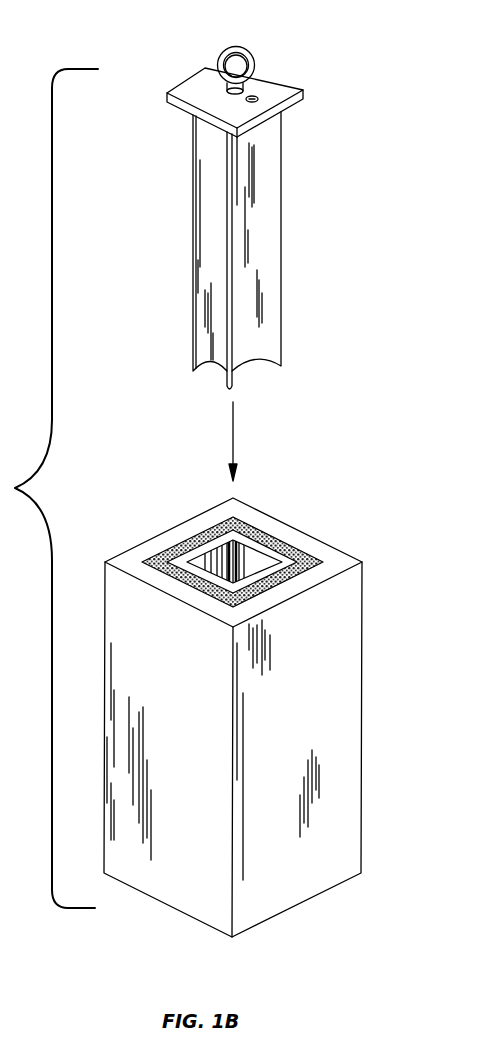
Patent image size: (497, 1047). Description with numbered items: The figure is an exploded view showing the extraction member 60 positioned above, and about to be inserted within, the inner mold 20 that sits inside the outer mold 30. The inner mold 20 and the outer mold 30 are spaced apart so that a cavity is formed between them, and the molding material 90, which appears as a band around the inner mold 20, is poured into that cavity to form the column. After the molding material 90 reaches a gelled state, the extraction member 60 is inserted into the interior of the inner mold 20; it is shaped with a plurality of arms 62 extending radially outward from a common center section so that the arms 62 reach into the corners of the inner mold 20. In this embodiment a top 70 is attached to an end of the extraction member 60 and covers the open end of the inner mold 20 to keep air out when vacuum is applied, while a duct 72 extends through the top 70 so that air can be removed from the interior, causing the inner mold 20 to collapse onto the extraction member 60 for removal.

The inner mold 20 is at (253, 541).
The outer mold 30 is at (287, 887).
The extraction member 60 is at (257, 258).
The arms 62 is at (235, 198).
The top 70 is at (258, 80).
The duct 72 is at (250, 95).
The molding material 90 is at (307, 563).